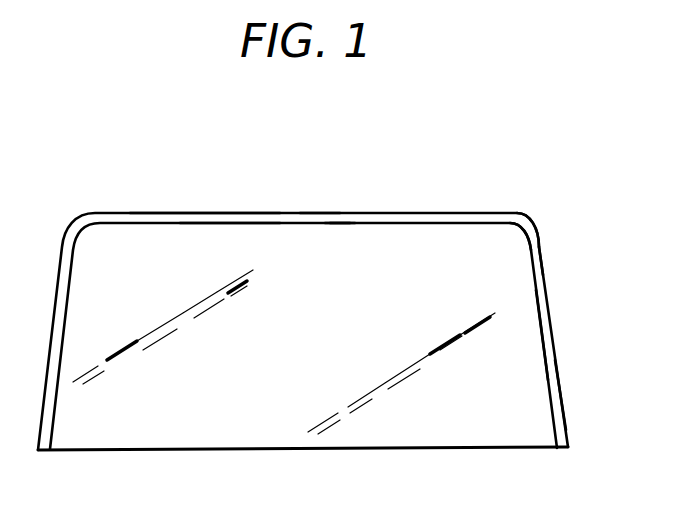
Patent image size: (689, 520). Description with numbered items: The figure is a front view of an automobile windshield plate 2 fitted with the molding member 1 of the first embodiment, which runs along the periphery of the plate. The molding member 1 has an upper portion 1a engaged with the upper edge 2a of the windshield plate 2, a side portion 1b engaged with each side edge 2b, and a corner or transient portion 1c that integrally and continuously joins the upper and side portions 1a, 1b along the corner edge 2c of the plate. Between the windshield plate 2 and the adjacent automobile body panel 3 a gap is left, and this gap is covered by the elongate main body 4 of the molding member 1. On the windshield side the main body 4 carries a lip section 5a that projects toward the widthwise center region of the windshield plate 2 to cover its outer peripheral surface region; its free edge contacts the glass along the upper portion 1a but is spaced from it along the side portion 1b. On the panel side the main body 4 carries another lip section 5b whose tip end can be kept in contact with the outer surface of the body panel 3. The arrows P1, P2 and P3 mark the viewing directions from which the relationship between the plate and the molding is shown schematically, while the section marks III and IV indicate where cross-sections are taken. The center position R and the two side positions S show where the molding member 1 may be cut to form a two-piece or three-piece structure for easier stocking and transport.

The molding member 1 is at (434, 210).
The upper portion 1a is at (230, 222).
The side portion 1b is at (552, 305).
The corner portion 1c is at (523, 234).
The windshield plate 2 is at (400, 425).
The upper edge 2a is at (183, 243).
The side edge 2b is at (540, 417).
The corner edge 2c is at (533, 223).
The body panel 3 is at (553, 252).
The main body 4 is at (318, 206).
The lip section 5a is at (340, 225).
The lip section 5b is at (337, 224).
The side positions S is at (104, 240).
The center position R is at (300, 240).
The arrow P1 is at (453, 293).
The arrow P2 is at (453, 293).
The arrow P3 is at (453, 293).
The section III- III is at (410, 196).
The section IV- IV is at (530, 390).